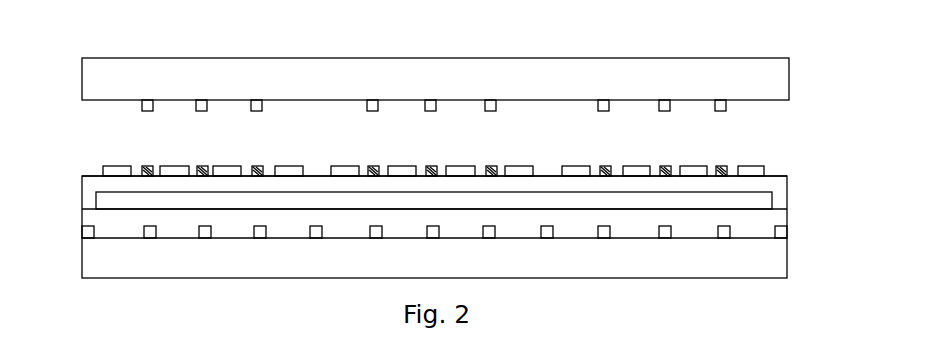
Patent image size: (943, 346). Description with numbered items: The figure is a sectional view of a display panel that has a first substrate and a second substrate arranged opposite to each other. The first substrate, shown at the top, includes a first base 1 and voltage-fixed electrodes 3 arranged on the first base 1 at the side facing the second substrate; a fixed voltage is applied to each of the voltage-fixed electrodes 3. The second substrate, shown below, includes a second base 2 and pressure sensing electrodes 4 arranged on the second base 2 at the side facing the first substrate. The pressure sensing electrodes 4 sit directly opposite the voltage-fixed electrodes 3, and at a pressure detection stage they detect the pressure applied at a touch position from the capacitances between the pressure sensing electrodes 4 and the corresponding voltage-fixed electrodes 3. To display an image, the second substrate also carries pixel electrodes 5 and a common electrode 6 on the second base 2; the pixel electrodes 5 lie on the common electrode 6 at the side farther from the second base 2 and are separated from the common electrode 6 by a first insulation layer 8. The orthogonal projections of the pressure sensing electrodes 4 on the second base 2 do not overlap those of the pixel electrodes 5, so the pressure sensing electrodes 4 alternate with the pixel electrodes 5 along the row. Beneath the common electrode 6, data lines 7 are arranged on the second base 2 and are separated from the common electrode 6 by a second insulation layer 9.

The first base 1 is at (768, 79).
The second base 2 is at (770, 258).
The voltage-fixed electrodes 3 is at (142, 106).
The pressure sensing electrodes 4 is at (146, 168).
The pixel electrodes 5 is at (757, 171).
The common electrode 6 is at (758, 201).
The data lines 7 is at (780, 232).
The first insulation layer 8 is at (96, 184).
The second insulation layer 9 is at (96, 217).